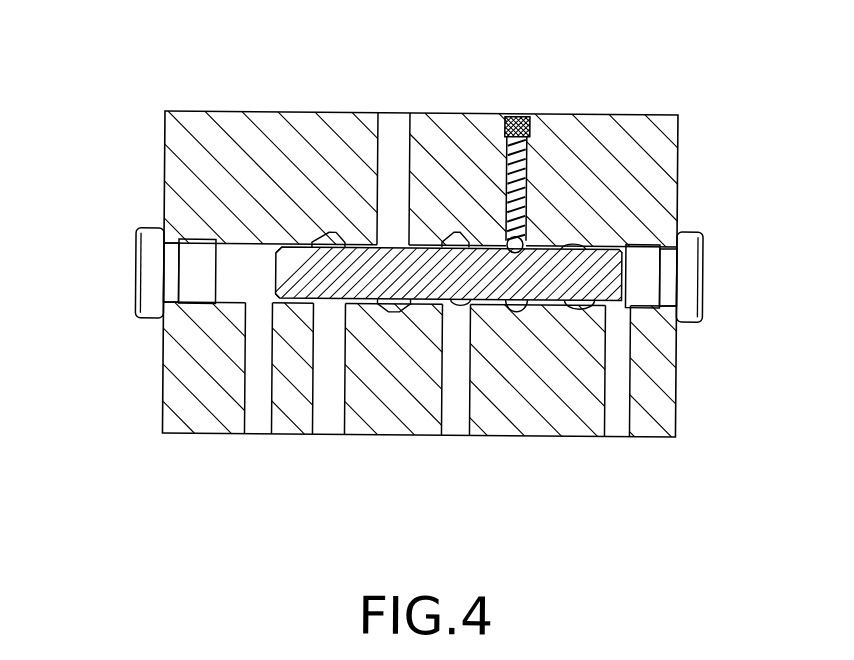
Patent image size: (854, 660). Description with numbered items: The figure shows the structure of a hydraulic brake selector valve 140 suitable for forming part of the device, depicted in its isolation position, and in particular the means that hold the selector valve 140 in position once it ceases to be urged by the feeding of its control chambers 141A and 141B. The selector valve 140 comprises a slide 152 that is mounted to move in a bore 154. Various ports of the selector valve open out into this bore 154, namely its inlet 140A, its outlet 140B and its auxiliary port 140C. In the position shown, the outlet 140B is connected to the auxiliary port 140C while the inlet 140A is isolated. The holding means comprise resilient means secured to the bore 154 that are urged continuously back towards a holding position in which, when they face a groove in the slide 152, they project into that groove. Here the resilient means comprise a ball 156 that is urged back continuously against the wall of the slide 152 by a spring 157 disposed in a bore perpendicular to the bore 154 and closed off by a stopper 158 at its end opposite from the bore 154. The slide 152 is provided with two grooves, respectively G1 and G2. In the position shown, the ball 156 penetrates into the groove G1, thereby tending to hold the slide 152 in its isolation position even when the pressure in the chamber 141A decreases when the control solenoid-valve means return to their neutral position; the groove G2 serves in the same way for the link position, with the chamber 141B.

The selector valve 140 is at (601, 105).
The inlet 140A is at (330, 412).
The outlet 140B is at (398, 148).
The auxiliary port 140C is at (458, 410).
The control chamber 141A is at (238, 266).
The control chamber 141B is at (607, 246).
The slide 152 is at (551, 274).
The bore 154 is at (277, 258).
The ball 156 is at (507, 241).
The spring 157 is at (522, 172).
The stopper 158 is at (516, 112).
The groove G1 is at (520, 312).
The groove G2 is at (575, 302).